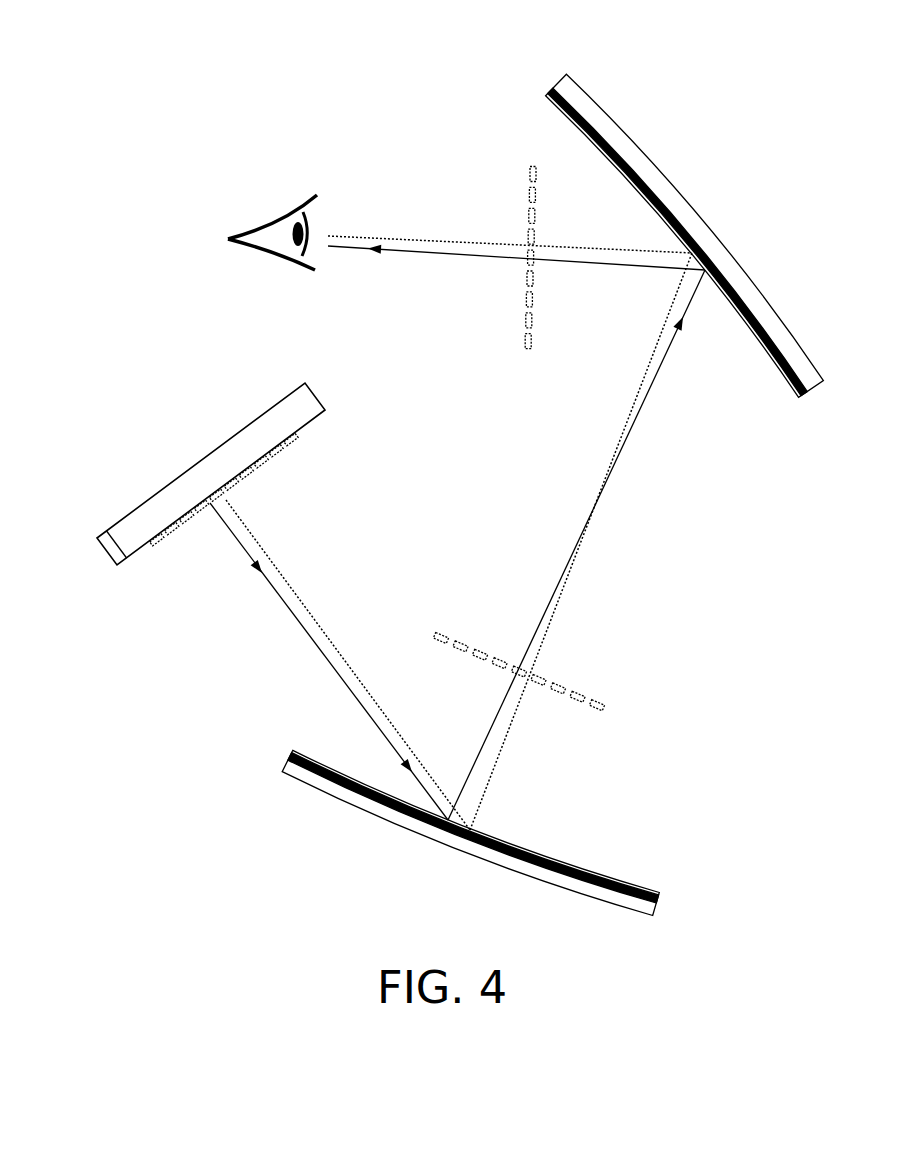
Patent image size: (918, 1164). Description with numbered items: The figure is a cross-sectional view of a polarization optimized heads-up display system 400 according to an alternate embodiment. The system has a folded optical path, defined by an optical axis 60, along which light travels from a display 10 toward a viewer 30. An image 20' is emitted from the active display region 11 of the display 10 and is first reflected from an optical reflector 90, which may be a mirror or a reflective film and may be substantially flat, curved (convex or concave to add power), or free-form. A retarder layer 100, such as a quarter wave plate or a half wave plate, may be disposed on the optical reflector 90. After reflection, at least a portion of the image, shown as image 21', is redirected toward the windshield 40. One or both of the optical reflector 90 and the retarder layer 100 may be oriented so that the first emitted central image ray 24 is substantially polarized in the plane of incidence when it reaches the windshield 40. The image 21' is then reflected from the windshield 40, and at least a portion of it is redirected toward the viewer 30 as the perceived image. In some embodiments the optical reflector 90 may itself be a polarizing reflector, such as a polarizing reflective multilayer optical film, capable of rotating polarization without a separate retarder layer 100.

The polarization optimized heads-up display system 400 is at (222, 80).
The windshield 40 is at (583, 66).
The viewer 30 is at (273, 222).
The first emitted central image ray 24 is at (406, 250).
The display 10 is at (307, 405).
The active display region 11 is at (118, 545).
The image 20' is at (207, 534).
The optical axis 60 is at (303, 600).
The image 21' is at (562, 682).
The retarder layer 100 is at (662, 896).
The optical reflector 90 is at (651, 911).